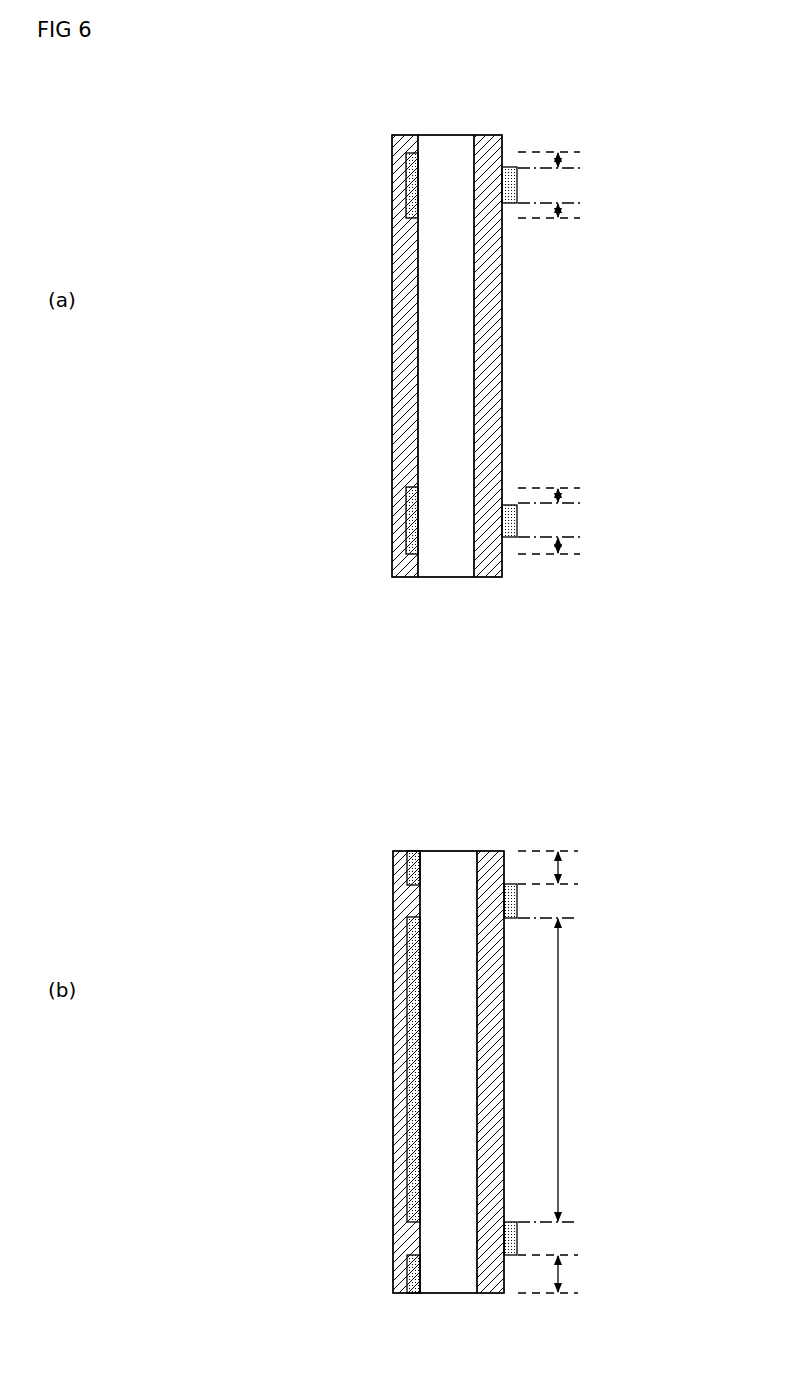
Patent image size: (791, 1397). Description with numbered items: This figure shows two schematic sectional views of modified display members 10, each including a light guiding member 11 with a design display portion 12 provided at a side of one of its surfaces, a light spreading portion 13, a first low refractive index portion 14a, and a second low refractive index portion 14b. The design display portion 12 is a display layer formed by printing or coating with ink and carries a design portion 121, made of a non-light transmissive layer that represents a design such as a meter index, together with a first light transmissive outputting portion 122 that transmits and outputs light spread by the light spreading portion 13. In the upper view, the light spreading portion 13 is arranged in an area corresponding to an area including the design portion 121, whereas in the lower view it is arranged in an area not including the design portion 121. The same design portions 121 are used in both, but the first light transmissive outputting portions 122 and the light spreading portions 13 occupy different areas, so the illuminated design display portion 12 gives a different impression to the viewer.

The display member 10 is at (522, 105).
The light guiding member 11 is at (447, 157).
The design display portion 12 is at (538, 352).
The light spreading portion 13 is at (412, 187).
The first low refractive index portion 14a is at (490, 287).
The second low refractive index portion 14b is at (417, 146).
The design portion 121 is at (517, 185).
The first light transmissive outputting portion 122 is at (558, 160).